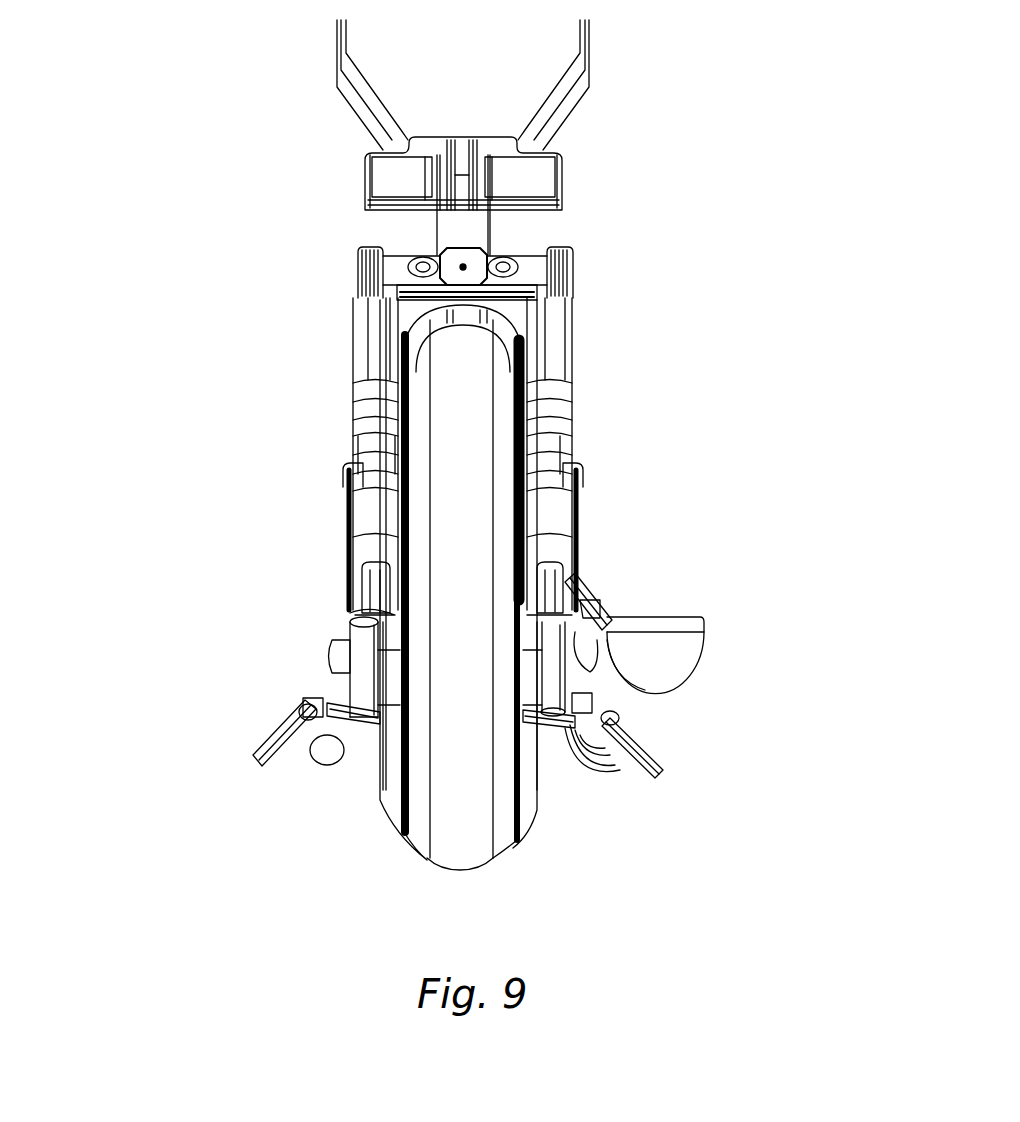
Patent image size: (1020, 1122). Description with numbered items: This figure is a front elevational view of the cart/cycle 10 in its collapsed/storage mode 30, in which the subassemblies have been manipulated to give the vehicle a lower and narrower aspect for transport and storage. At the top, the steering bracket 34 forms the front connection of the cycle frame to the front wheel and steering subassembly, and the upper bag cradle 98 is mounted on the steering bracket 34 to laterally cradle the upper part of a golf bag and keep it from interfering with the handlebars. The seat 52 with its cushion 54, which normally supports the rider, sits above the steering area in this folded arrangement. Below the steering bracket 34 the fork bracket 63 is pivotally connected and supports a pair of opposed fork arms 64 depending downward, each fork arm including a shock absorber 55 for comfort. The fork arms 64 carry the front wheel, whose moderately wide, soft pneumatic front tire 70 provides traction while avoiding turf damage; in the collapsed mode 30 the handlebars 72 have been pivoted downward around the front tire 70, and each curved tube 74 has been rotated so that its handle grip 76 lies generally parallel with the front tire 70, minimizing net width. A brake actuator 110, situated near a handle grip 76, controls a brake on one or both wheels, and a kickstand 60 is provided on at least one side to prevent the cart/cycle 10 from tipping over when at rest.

The cart/cycle 10 is at (645, 146).
The collapsed/storage mode 30 is at (691, 165).
The upper bag cradle 98 is at (365, 108).
The seat 52 is at (587, 160).
The cushion 54 is at (394, 181).
The steering bracket 34 is at (460, 230).
The fork bracket 63 is at (355, 258).
The fork arms 64 is at (360, 372).
The shock absorber 55 is at (375, 458).
The curved tube 74 is at (573, 355).
The handlebars 72 is at (570, 375).
The front tire 70 is at (480, 867).
The kickstand 60 is at (700, 670).
The handle grips 76 is at (325, 770).
The brake actuator 110 is at (285, 736).